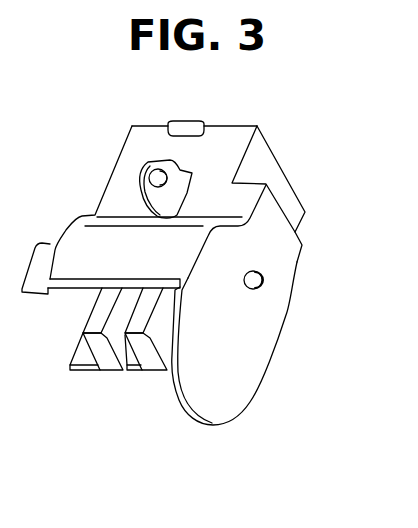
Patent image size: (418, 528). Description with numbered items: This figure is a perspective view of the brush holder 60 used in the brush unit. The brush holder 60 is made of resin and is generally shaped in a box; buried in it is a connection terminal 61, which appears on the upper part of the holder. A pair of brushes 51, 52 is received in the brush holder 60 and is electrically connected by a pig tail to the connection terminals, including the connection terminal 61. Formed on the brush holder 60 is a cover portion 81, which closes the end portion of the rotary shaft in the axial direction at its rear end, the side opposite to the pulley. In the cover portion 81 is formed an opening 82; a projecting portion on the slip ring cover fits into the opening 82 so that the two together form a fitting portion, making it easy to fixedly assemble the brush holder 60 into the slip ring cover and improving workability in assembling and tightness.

The brush 51 is at (108, 370).
The brush 52 is at (157, 370).
The brush holder 60 is at (305, 322).
The connection terminal 61 is at (156, 166).
The cover portion 81 is at (227, 352).
The opening 82 is at (263, 278).